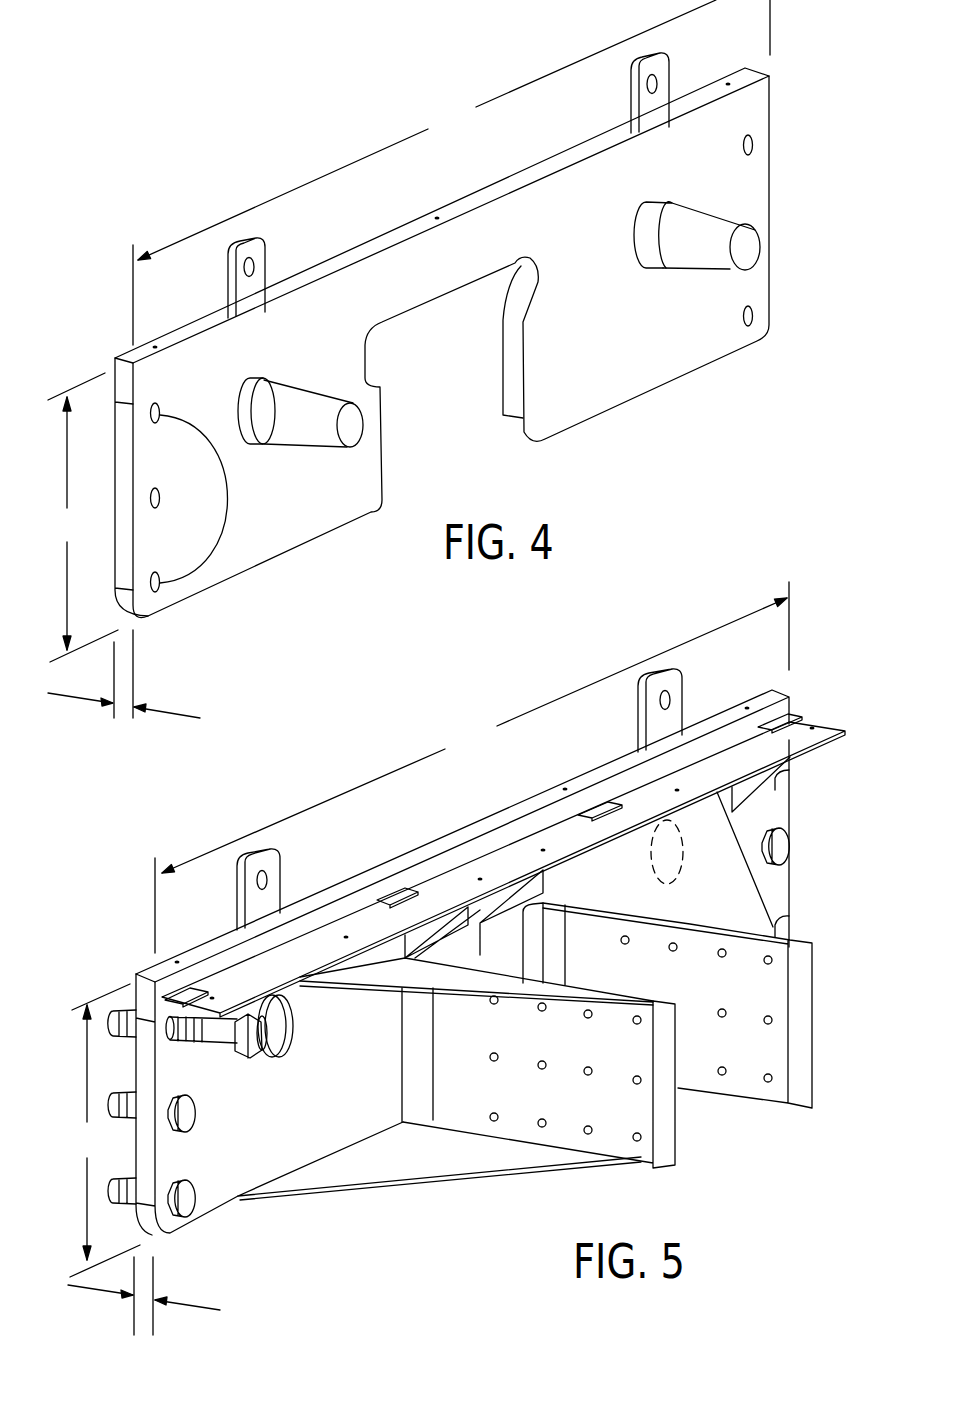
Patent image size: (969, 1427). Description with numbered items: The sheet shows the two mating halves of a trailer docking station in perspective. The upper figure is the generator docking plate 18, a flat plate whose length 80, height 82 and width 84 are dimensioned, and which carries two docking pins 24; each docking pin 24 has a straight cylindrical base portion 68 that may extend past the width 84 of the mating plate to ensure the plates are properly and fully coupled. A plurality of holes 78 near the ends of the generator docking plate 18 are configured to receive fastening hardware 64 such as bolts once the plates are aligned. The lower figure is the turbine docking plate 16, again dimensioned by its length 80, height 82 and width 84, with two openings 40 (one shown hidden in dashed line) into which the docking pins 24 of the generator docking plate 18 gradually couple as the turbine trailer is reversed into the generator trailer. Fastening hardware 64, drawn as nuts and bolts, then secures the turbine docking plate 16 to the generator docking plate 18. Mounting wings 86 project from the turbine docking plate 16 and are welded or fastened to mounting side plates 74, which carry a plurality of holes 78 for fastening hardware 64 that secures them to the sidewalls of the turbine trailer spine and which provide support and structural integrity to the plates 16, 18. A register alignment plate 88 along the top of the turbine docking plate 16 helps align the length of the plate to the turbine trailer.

In FIG. 5, the turbine docking plate 16 is at (764, 567).
In FIG. 4, the generator docking plate 18 is at (802, 75).
In FIG. 4, the docking pin 24 is at (303, 435).
In FIG. 5, the opening 40 is at (292, 1018).
In FIG. 5, the fastening hardware 64 is at (193, 1188).
In FIG. 4, the base portion 68 is at (257, 385).
In FIG. 5, the mounting side plate 74 is at (565, 1125).
In FIG. 4, the hole 78 is at (160, 498).
In FIG. 5, the hole 78 is at (494, 1117).
In FIG. 4, the length 80 is at (451, 172).
In FIG. 5, the length 80 is at (472, 767).
In FIG. 4, the height 82 is at (83, 517).
In FIG. 5, the height 82 is at (105, 1130).
In FIG. 4, the width 84 is at (80, 700).
In FIG. 5, the width 84 is at (97, 1292).
In FIG. 5, the mounting wing 86 is at (385, 972).
In FIG. 5, the register alignment plate 88 is at (827, 728).